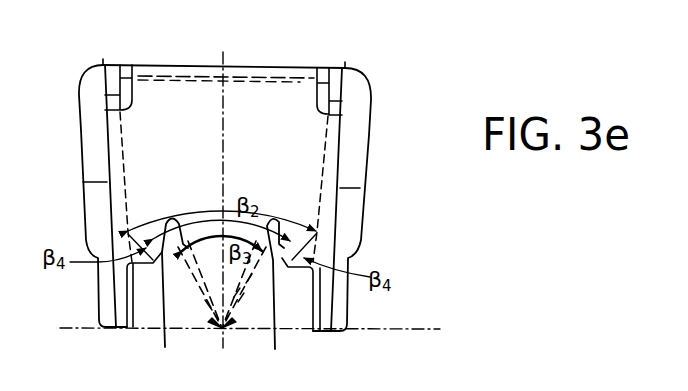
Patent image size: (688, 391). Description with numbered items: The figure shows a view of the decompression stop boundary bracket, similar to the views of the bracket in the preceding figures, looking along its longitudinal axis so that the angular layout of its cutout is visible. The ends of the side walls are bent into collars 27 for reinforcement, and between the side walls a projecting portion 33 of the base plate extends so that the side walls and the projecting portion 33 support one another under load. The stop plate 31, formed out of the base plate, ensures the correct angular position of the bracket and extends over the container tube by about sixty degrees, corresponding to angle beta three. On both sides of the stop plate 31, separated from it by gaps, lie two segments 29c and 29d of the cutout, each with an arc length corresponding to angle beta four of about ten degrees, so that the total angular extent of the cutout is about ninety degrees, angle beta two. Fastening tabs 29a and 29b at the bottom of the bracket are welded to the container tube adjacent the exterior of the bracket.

The collars 27 is at (93, 131).
The stop plate 31 is at (207, 222).
The projecting portion 33 is at (284, 70).
The fastening tab 29a is at (127, 327).
The fastening tab 29b is at (318, 334).
The segment of cutout 29c is at (178, 300).
The segment of cutout 29d is at (260, 301).